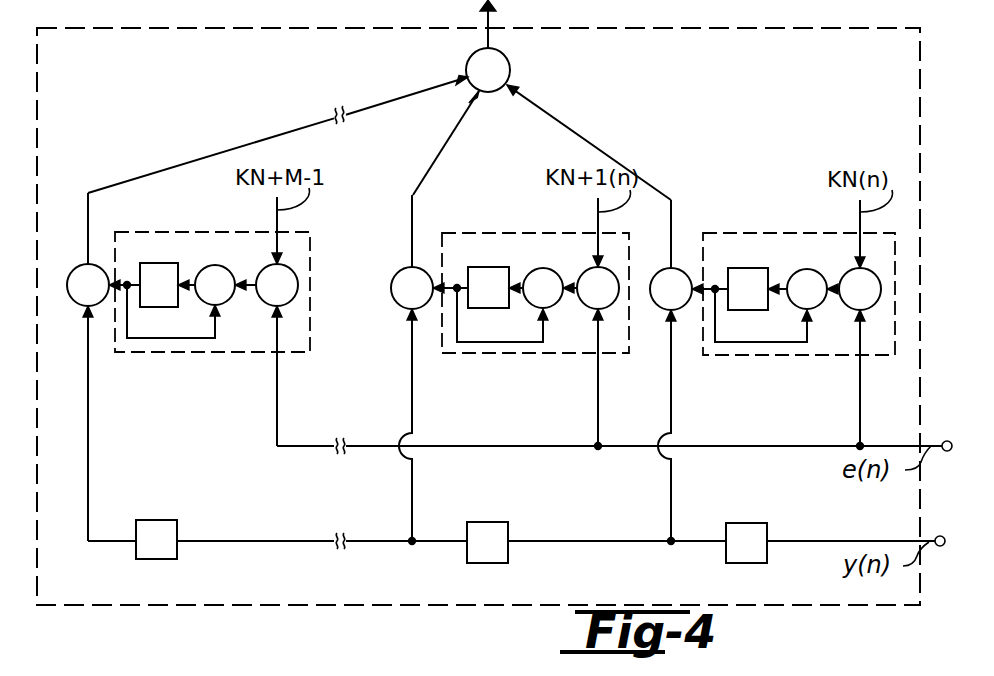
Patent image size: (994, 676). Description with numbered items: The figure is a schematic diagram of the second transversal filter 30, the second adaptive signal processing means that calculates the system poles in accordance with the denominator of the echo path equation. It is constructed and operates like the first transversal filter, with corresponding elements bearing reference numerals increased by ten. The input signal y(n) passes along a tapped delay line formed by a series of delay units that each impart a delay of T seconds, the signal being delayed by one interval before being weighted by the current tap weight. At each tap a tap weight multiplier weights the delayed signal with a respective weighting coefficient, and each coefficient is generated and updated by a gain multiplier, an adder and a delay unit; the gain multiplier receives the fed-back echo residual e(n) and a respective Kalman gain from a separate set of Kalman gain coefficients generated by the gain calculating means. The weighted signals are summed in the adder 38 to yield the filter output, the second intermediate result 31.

The second transversal filter 30 is at (314, 604).
The second intermediate result 31 is at (492, 42).
The adder 38 is at (466, 66).